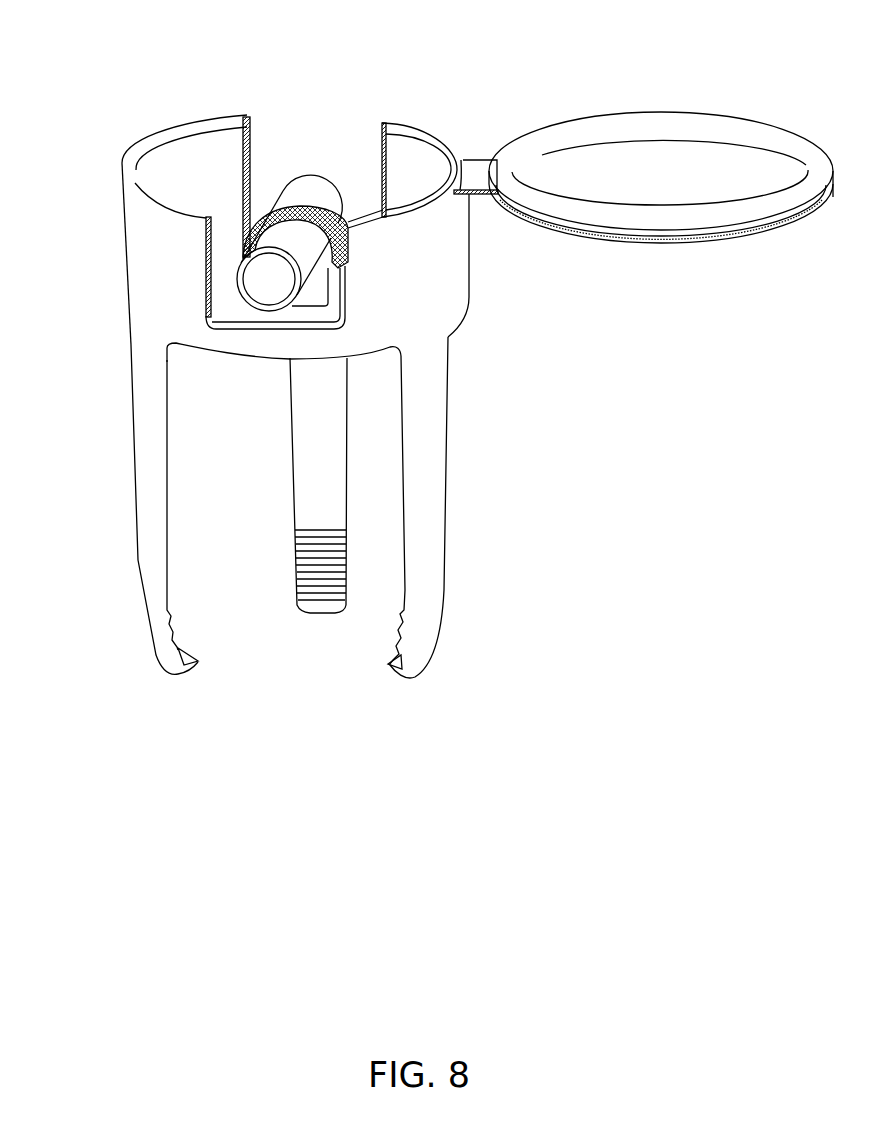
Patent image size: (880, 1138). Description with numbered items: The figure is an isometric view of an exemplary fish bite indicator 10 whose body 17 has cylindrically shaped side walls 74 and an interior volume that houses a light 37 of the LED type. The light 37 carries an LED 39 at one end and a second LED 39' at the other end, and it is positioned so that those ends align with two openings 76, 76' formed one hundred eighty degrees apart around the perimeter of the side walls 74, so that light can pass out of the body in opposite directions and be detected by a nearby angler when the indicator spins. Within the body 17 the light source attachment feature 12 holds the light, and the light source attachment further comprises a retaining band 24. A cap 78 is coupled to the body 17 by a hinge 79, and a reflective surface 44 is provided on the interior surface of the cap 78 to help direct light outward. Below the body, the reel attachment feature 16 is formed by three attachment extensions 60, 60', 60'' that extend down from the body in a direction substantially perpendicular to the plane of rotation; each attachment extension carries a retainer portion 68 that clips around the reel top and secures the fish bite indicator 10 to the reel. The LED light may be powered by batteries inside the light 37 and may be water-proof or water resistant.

The fish bite indicator 10 is at (122, 148).
The light source attachment feature 12 is at (266, 214).
The reel attachment feature 16 is at (157, 450).
The body 17 is at (455, 278).
The retaining band 24 is at (343, 247).
The light 37 is at (317, 193).
The LED 39 is at (187, 251).
The LED 39' is at (353, 139).
The reflective surface 44 is at (599, 170).
The attachment extension 60 is at (102, 505).
The attachment extension 60' is at (281, 485).
The attachment extension 60'' is at (483, 510).
The retainer portion 68 is at (172, 663).
The side walls 74 is at (445, 222).
The opening 76 is at (237, 230).
The opening 76' is at (220, 143).
The cap 78 is at (663, 145).
The hinge 79 is at (461, 160).